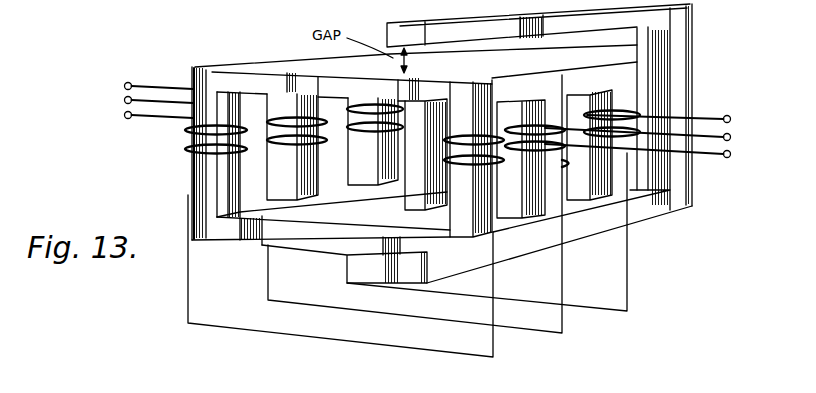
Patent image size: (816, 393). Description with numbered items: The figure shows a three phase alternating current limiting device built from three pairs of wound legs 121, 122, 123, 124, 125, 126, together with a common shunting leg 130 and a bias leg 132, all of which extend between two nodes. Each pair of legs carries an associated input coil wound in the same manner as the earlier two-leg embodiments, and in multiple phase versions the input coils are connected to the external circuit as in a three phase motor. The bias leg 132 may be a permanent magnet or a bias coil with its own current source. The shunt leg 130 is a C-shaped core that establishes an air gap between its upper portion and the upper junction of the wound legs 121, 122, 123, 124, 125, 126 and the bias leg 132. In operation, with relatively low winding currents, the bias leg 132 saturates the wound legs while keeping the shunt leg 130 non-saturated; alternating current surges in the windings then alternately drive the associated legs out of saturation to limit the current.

The wound leg 121 is at (210, 115).
The wound leg 122 is at (458, 125).
The wound leg 123 is at (293, 108).
The wound leg 124 is at (535, 110).
The wound leg 125 is at (367, 105).
The wound leg 126 is at (597, 100).
The common shunting leg 130 is at (676, 86).
The bias leg 132 is at (405, 197).